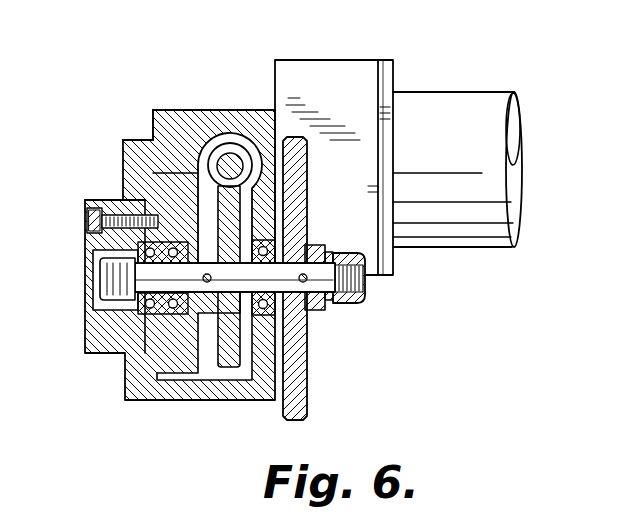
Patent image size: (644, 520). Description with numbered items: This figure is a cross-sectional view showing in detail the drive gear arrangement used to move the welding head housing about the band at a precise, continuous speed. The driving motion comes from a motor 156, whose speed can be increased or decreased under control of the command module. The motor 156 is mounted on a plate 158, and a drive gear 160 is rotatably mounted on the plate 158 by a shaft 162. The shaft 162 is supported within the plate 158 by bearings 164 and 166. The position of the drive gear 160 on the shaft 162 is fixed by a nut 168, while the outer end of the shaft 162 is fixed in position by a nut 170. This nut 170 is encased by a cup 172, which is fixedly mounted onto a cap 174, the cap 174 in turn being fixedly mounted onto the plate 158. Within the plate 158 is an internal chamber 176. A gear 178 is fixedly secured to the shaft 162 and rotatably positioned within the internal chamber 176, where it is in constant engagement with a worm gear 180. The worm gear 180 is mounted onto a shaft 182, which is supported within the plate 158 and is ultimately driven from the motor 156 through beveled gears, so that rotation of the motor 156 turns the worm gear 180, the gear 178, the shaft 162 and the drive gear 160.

The motor 156 is at (497, 181).
The plate 158 is at (222, 140).
The drive gear 160 is at (300, 352).
The shaft 162 is at (148, 305).
The bearing 164 is at (280, 313).
The bearing 166 is at (125, 358).
The nut 168 is at (363, 300).
The nut 170 is at (138, 300).
The cup 172 is at (112, 205).
The cap 174 is at (123, 140).
The internal chamber 176 is at (214, 378).
The gear 178 is at (242, 388).
The worm gear 180 is at (158, 111).
The shaft 182 is at (230, 156).